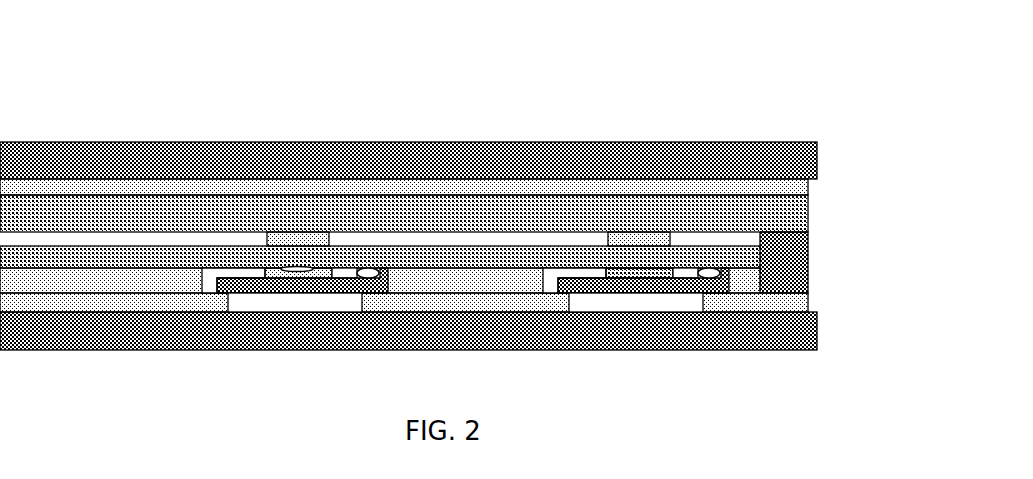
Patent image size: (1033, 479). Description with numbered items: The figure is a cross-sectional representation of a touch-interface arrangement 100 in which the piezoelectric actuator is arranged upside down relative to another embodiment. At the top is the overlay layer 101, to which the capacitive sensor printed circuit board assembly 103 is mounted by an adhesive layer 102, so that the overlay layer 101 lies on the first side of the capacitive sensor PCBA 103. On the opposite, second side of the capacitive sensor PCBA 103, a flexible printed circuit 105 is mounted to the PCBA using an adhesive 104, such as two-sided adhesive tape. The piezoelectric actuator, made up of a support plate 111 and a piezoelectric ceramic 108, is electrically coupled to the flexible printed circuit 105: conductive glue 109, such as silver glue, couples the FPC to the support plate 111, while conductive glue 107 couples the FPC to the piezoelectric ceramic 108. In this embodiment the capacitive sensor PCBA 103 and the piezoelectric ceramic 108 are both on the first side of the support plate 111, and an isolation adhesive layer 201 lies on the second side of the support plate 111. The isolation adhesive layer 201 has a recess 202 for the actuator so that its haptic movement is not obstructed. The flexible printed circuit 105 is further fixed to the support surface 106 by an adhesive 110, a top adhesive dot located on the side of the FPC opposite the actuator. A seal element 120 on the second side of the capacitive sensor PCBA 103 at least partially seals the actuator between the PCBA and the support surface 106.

The touch-interface arrangement 100 is at (166, 100).
The overlay layer 101 is at (808, 163).
The adhesive layer 102 is at (802, 188).
The capacitive sensor printed circuit board assembly 103 is at (803, 212).
The adhesive 104 is at (750, 277).
The flexible printed circuit 105 is at (752, 253).
The support surface 106 is at (808, 333).
The conductive glue 107 is at (715, 272).
The piezoelectric ceramic 108 is at (667, 274).
The conductive glue 109 is at (645, 267).
The adhesive 110 is at (623, 245).
The support plate 111 is at (563, 284).
The seal element 120 is at (802, 287).
The isolation adhesive layer 201 is at (807, 303).
The recess 202 is at (593, 302).